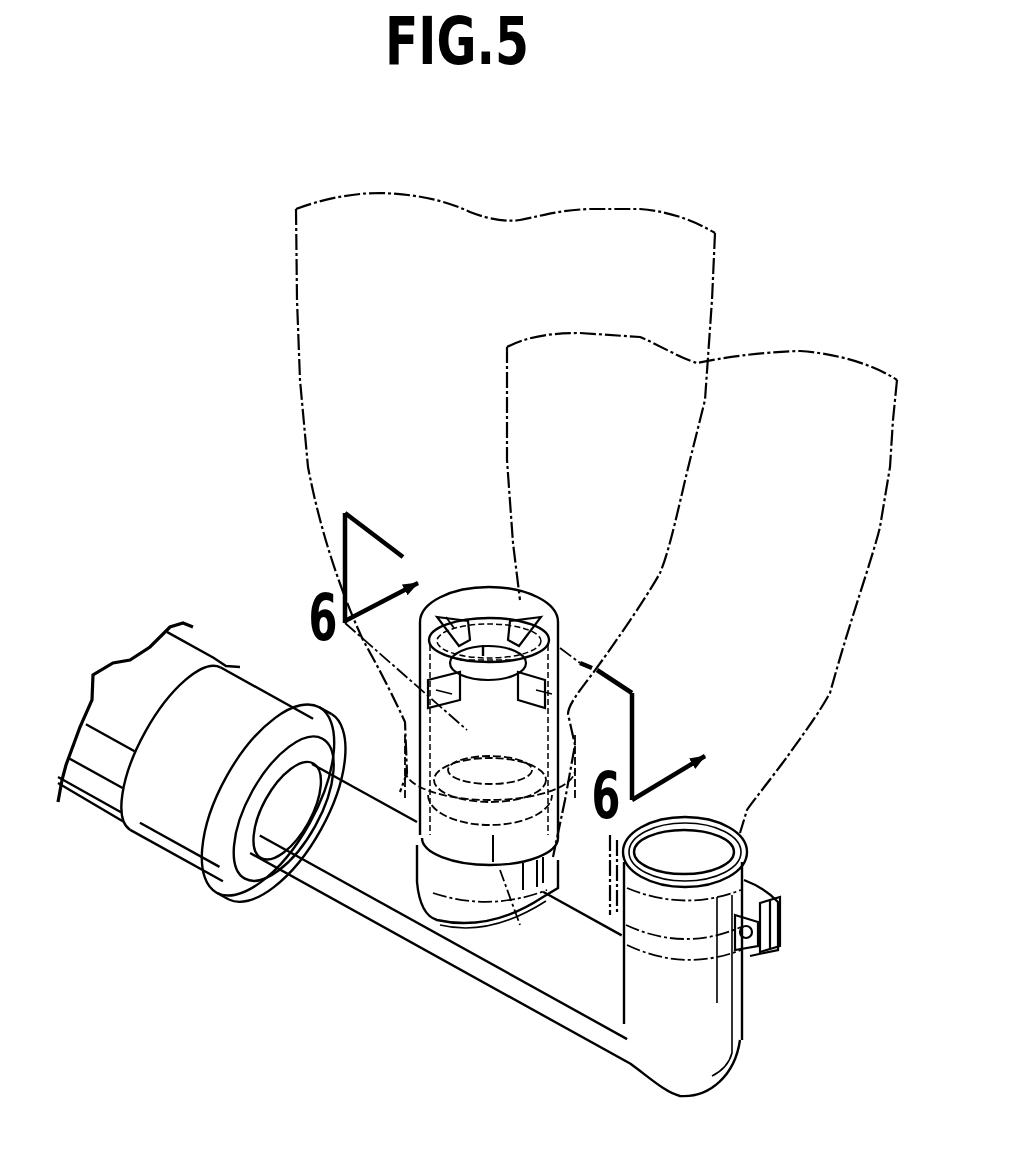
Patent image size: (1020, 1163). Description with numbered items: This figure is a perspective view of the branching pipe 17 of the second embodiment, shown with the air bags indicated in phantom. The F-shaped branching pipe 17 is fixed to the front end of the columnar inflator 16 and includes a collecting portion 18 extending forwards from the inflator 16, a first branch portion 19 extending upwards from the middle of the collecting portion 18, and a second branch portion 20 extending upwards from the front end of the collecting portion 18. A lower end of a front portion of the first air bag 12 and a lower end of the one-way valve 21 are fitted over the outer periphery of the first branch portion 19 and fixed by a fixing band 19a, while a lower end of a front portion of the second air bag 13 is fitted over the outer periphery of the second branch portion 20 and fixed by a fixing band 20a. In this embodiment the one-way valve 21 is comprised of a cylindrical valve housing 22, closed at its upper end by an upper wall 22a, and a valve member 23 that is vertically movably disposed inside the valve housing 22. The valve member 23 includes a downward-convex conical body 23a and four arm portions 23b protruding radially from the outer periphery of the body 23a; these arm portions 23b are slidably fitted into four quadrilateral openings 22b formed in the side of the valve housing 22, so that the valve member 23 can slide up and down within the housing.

The first air bag 12 is at (296, 327).
The second air bag 13 is at (830, 693).
The inflator 16 is at (98, 806).
The branching pipe 17 is at (470, 985).
The collecting portion 18 is at (347, 895).
The first branch portion 19 is at (430, 870).
The fixing band 19a is at (526, 920).
The second branch portion 20 is at (713, 1003).
The fixing band 20a is at (762, 876).
The one-way valve 21 is at (560, 578).
The valve housing 22 is at (477, 580).
The upper wall 22a is at (498, 597).
The quadrilateral openings 22b is at (437, 678).
The valve member 23 is at (400, 793).
The body 23a is at (447, 617).
The arm portions 23b is at (558, 666).